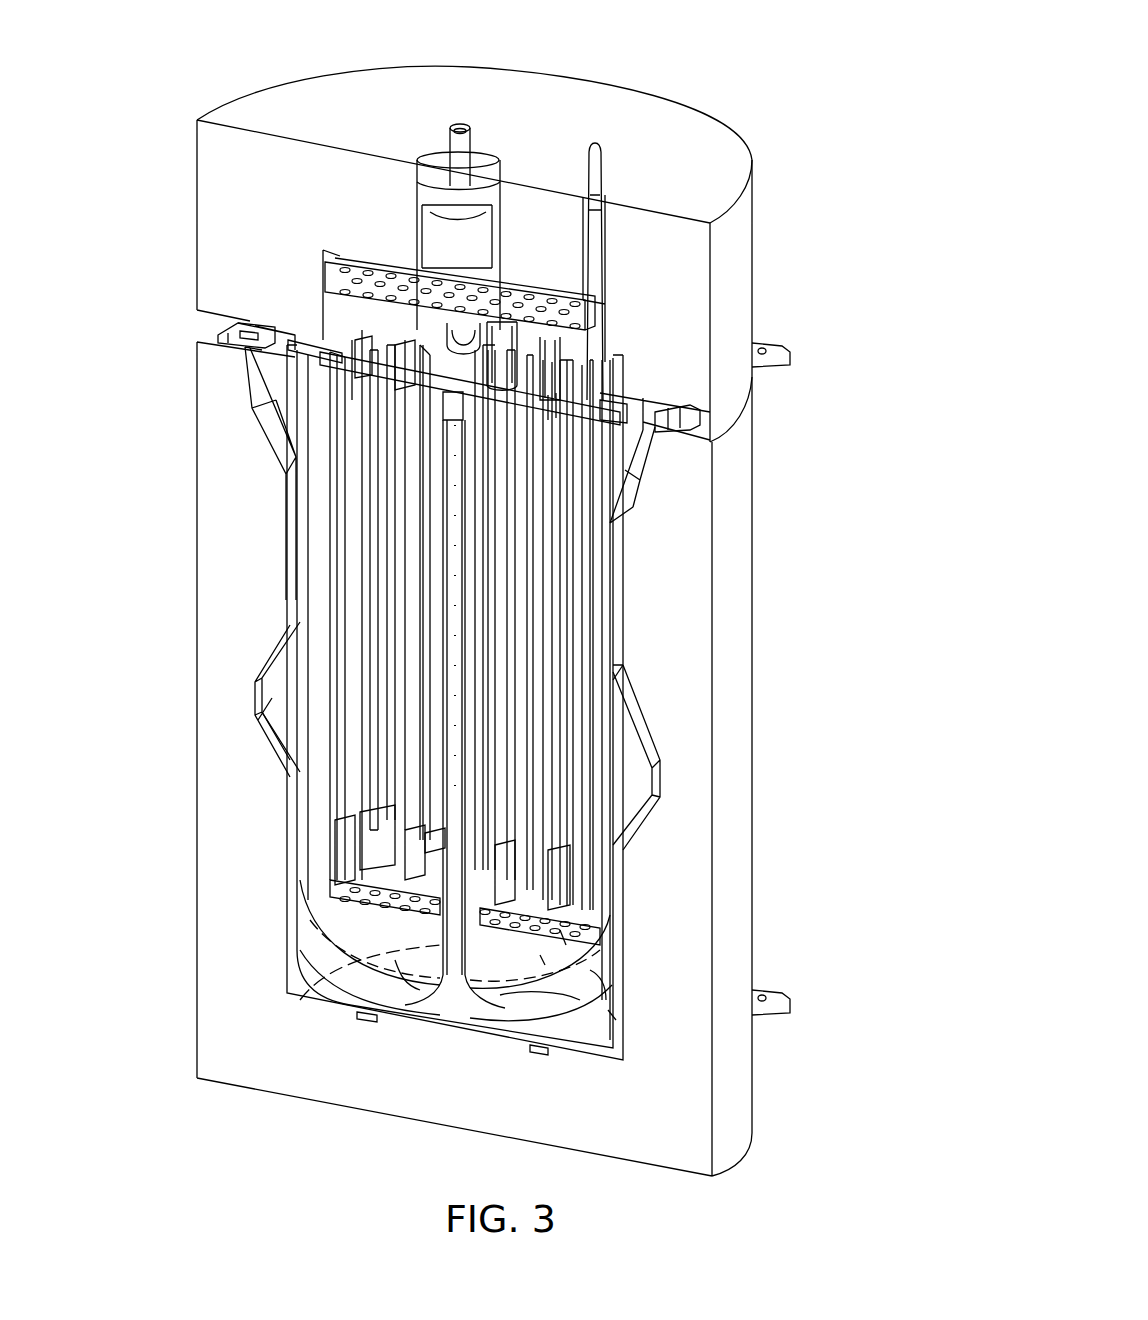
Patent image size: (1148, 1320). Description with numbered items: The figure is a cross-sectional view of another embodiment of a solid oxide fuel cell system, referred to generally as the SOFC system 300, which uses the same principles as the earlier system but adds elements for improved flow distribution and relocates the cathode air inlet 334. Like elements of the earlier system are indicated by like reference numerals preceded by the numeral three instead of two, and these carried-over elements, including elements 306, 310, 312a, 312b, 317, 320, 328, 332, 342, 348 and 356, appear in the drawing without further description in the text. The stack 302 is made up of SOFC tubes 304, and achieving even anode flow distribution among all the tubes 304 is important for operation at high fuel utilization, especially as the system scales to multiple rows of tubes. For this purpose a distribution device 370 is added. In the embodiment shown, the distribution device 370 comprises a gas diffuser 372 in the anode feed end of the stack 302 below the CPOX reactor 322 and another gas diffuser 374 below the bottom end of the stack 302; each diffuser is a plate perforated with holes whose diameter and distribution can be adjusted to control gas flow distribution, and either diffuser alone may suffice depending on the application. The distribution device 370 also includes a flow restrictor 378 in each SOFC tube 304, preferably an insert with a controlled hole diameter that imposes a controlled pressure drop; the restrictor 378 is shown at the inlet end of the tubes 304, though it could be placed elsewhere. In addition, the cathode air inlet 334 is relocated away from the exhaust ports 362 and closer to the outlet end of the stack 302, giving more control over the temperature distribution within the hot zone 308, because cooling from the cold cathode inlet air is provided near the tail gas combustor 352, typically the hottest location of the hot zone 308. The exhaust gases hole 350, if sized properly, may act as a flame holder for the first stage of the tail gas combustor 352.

The SOFC system 300 is at (692, 50).
The stack 302 is at (355, 555).
The SOFC tubes 304 is at (557, 610).
The support lug 306 is at (353, 307).
The hot zone 308 is at (600, 977).
The support bracket 310 is at (287, 658).
The upper containment block 312a is at (698, 248).
The lower containment block 312b is at (697, 767).
The lower support 317 is at (437, 837).
The inlet pipe 320 is at (462, 148).
The CPOX reactor 322 is at (433, 242).
The lower tube 328 is at (563, 938).
The bottom region 332 is at (370, 972).
The cathode air inlet 334 is at (272, 700).
The central instrument rod 342 is at (452, 577).
The lower conduit 348 is at (543, 962).
The exhaust gases hole 350 is at (420, 958).
The tail gas combustor 352 is at (518, 1012).
The sensor rod 356 is at (593, 223).
The exhaust ports 362 is at (647, 410).
The distribution device 370 is at (512, 303).
The gas diffuser 372 is at (337, 281).
The gas diffuser 374 is at (613, 1020).
The flow restrictor 378 is at (553, 410).